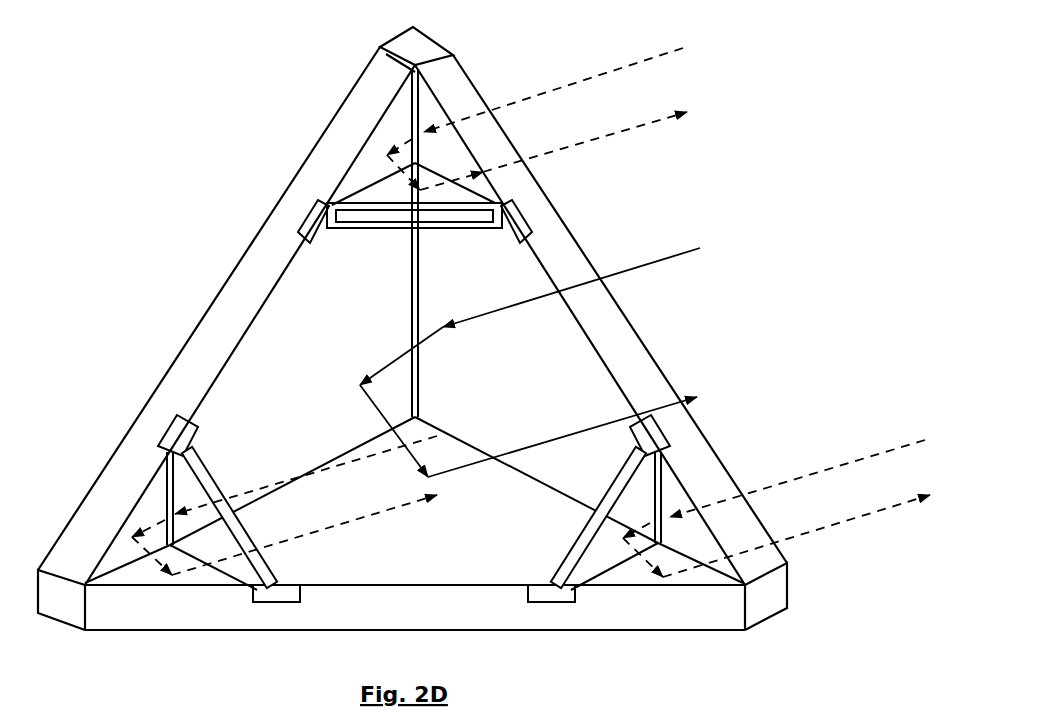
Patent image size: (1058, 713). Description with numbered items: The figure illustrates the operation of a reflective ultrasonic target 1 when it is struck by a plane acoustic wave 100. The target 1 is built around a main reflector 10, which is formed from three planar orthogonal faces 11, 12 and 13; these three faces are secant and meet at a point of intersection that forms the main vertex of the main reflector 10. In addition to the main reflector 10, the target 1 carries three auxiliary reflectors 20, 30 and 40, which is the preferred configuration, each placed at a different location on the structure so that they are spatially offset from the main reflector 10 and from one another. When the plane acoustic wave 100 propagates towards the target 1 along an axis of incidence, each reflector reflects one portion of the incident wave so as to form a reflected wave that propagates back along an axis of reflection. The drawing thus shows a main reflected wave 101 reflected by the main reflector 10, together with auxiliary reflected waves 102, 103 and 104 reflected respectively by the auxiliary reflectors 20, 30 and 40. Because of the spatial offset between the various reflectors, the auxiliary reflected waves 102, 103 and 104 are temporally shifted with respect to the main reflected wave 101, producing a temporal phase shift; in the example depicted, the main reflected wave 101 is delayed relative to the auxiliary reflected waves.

The reflective ultrasonic target 1 is at (484, 353).
The main reflector 10 is at (412, 359).
The planar orthogonal face 11 is at (290, 302).
The planar orthogonal face 12 is at (513, 273).
The planar orthogonal face 13 is at (448, 545).
The auxiliary reflector 20 is at (405, 115).
The auxiliary reflector 30 is at (140, 572).
The auxiliary reflector 40 is at (620, 572).
The plane acoustic wave 100 is at (600, 75).
The main reflected wave 101 is at (657, 397).
The auxiliary reflected wave 102 is at (640, 130).
The auxiliary reflected wave 103 is at (362, 522).
The auxiliary reflected wave 104 is at (858, 517).